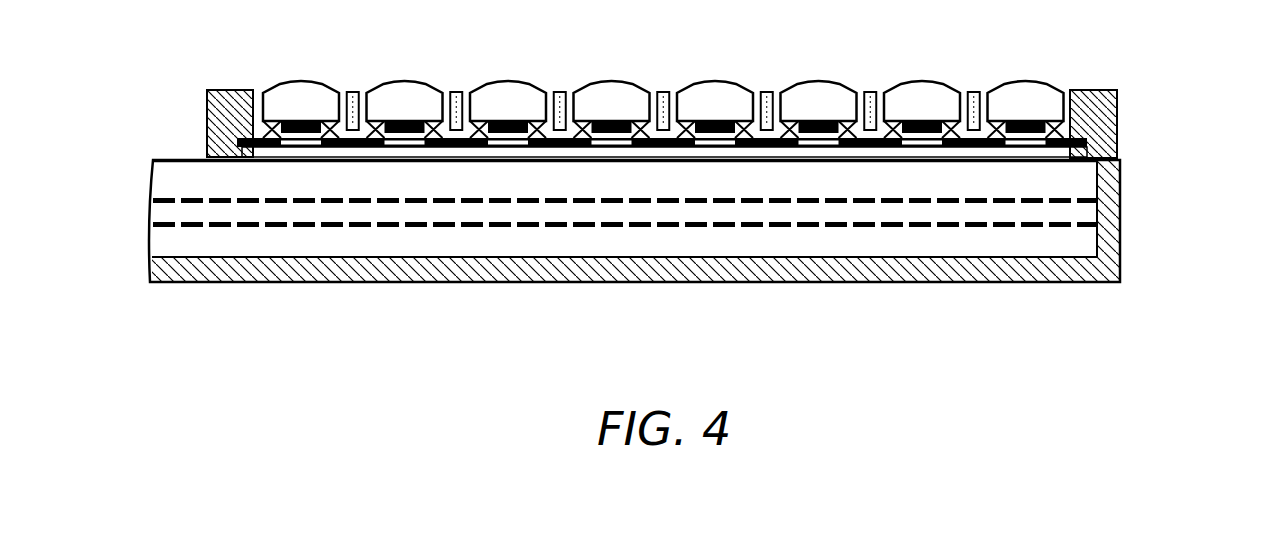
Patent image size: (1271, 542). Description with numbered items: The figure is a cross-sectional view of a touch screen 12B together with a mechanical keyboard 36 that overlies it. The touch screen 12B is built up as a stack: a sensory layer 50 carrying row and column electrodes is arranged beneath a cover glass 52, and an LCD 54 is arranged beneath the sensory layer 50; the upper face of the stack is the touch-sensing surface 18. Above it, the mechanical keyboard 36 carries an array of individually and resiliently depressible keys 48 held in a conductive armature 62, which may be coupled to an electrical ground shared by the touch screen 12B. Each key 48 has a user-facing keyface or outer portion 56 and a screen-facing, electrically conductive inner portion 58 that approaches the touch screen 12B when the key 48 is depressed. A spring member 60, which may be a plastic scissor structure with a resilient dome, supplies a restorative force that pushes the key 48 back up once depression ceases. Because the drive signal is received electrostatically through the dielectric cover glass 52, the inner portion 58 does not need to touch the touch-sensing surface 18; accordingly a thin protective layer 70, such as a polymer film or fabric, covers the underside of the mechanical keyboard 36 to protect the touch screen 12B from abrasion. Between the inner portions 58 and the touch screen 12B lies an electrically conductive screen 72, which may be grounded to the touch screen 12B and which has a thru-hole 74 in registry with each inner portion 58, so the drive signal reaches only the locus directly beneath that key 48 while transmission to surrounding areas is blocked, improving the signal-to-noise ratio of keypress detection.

The touch screen 12B is at (1158, 210).
The touch-sensing surface 18 is at (181, 141).
The mechanical keyboard 36 is at (1158, 116).
The key 48 is at (623, 109).
The sensory layer 50 is at (166, 208).
The cover glass 52 is at (621, 190).
The LCD 54 is at (857, 252).
The outer portion 56 is at (1038, 82).
The inner portion 58 is at (935, 120).
The spring member 60 is at (792, 110).
The conductive armature 62 is at (235, 90).
The protective layer 70 is at (403, 152).
The conductive screen 72 is at (477, 144).
The thru-hole 74 is at (300, 146).